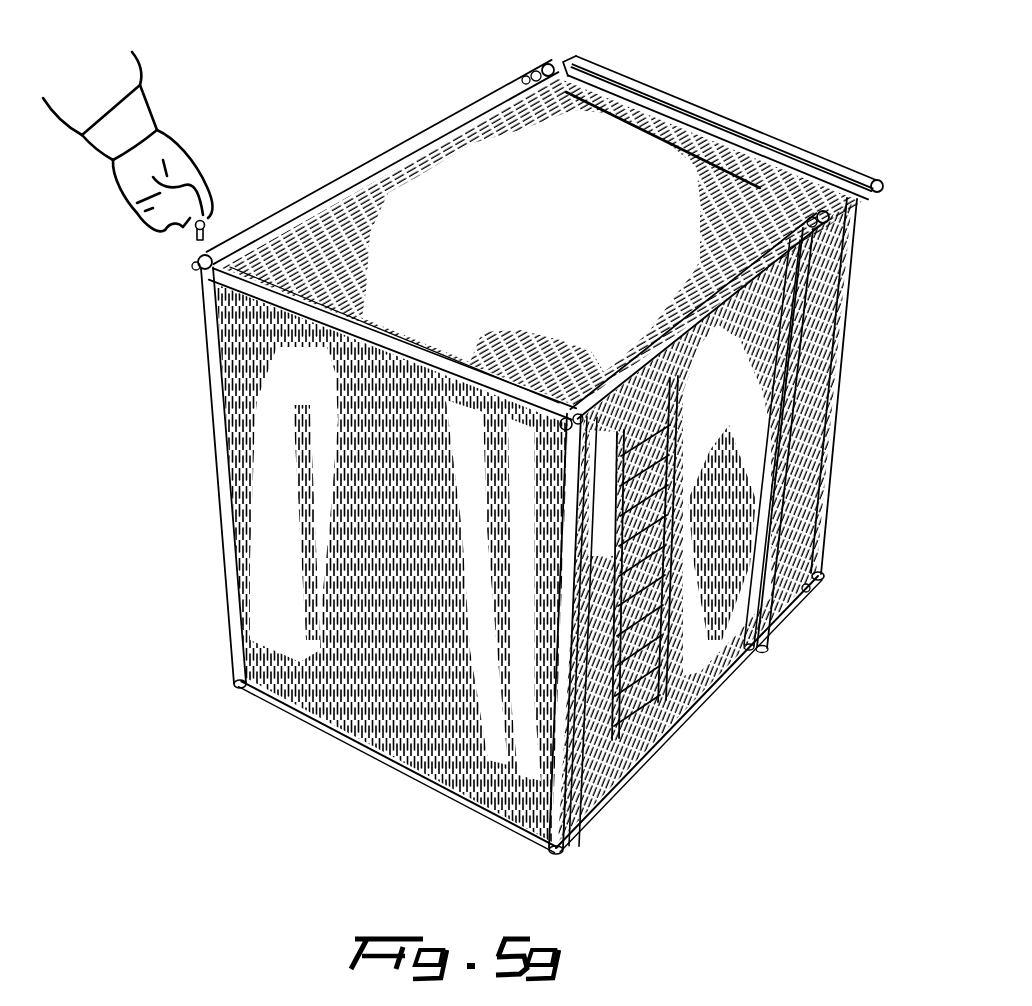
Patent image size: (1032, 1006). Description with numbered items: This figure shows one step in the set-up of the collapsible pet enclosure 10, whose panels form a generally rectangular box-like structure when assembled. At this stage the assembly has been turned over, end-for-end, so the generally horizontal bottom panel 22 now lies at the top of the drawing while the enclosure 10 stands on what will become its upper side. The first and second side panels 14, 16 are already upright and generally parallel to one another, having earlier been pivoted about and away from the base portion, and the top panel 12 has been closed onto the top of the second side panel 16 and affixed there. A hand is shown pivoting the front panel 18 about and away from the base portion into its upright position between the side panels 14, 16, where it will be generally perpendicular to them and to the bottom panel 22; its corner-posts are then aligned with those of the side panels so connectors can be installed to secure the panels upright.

The enclosure 10 is at (797, 73).
The top panel 12 is at (272, 593).
The first side panel 14 is at (470, 108).
The second side panel 16 is at (700, 644).
The front panel 18 is at (366, 218).
The bottom panel 22 is at (768, 207).